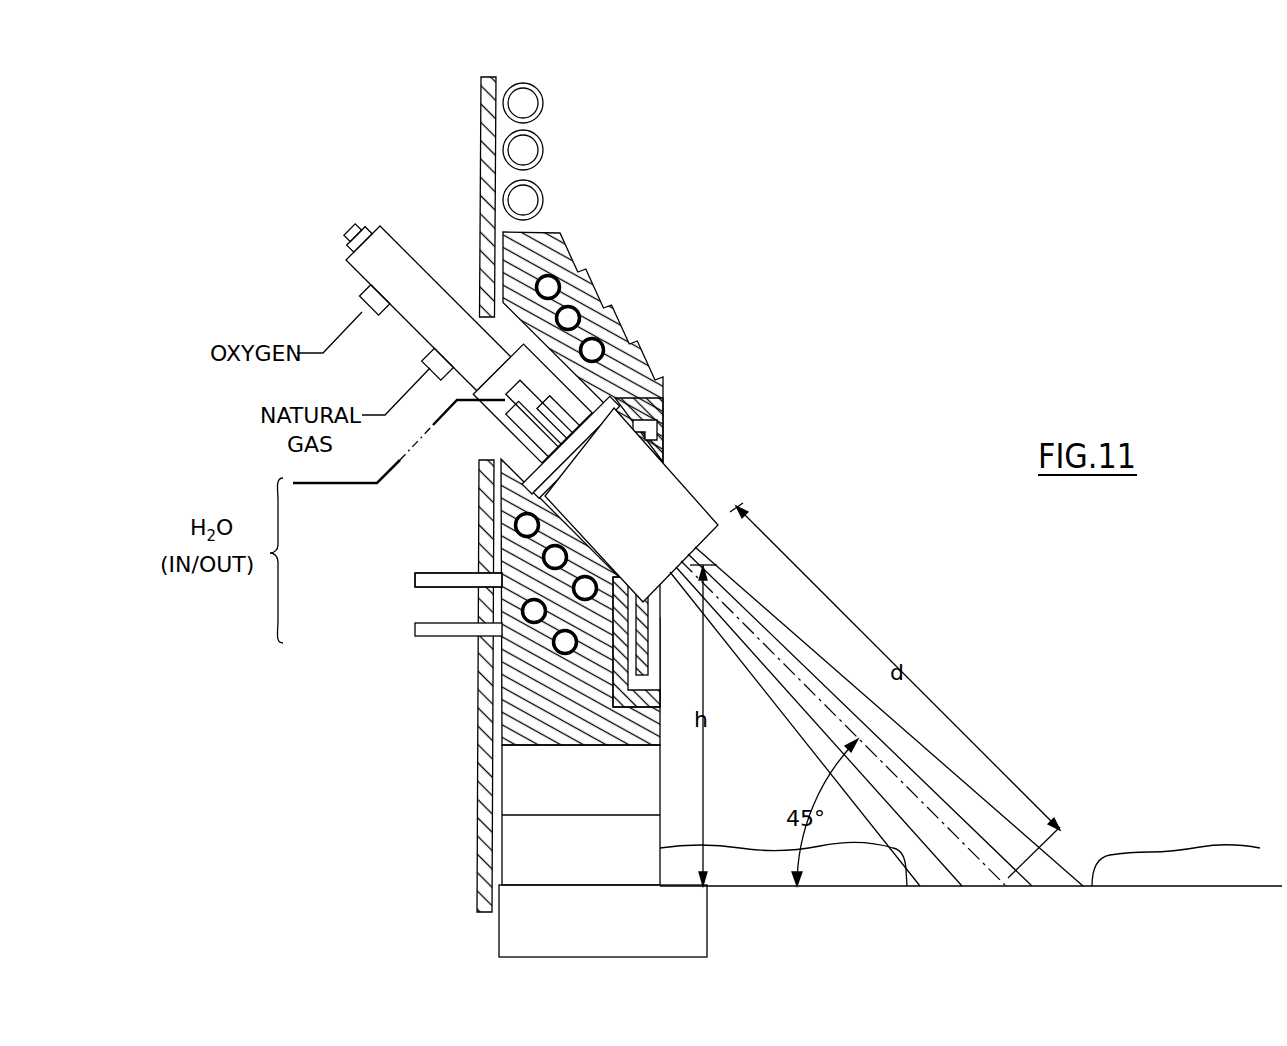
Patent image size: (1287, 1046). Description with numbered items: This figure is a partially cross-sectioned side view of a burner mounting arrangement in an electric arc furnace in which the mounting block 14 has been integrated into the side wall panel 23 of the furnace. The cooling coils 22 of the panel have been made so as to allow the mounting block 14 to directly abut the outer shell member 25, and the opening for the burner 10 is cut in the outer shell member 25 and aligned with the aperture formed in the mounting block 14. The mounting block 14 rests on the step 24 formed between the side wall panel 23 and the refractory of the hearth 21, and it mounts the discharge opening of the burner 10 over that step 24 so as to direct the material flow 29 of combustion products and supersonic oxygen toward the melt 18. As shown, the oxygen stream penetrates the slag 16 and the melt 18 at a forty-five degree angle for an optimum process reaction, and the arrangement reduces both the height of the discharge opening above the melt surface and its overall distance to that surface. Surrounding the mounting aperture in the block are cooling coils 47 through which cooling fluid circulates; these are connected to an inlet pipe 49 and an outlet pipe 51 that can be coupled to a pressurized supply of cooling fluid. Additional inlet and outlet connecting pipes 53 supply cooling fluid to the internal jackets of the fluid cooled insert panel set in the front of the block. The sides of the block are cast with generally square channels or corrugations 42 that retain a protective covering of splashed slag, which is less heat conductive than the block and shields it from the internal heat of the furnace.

The burner 10 is at (677, 494).
The mounting block 14 is at (622, 312).
The slag 16 is at (1100, 852).
The melt 18 is at (940, 887).
The hearth 21 is at (510, 910).
The cooling coils 22 is at (544, 142).
The side wall panel 23 is at (548, 190).
The step 24 is at (517, 752).
The outer shell member 25 is at (481, 246).
The material flow 29 is at (738, 585).
The channels or corrugations 42 is at (645, 358).
The cooling coils 47 is at (579, 305).
The inlet pipe 49 is at (416, 574).
The outlet pipe 51 is at (458, 580).
The inlet and outlet connecting pipes 53 is at (416, 628).